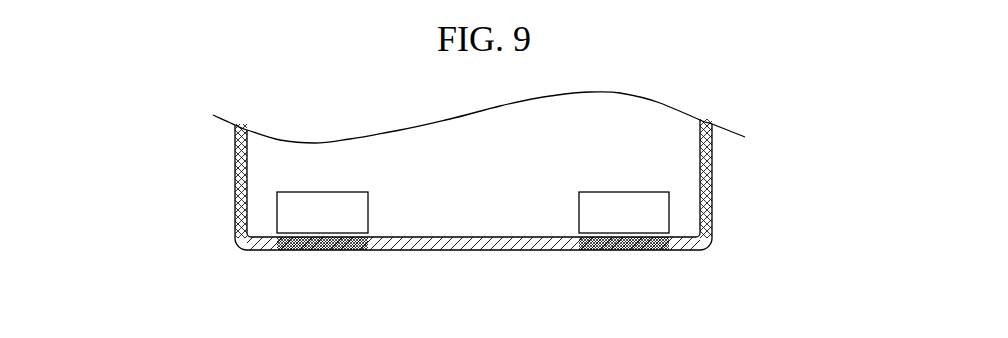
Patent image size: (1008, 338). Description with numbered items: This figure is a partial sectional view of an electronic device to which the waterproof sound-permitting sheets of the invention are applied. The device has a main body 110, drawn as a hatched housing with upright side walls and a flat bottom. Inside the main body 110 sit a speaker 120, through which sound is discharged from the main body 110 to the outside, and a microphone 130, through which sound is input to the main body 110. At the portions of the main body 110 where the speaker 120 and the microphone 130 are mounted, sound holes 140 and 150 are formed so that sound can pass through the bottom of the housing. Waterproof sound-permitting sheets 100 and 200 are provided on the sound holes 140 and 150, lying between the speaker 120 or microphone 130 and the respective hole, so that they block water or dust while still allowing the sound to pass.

The waterproof sound-permitting sheet 100 is at (366, 240).
The main body 110 is at (705, 166).
The speaker 120 is at (289, 212).
The microphone 130 is at (660, 213).
The sound hole 140 is at (325, 249).
The sound hole 150 is at (630, 249).
The waterproof sound-permitting sheet 200 is at (580, 236).